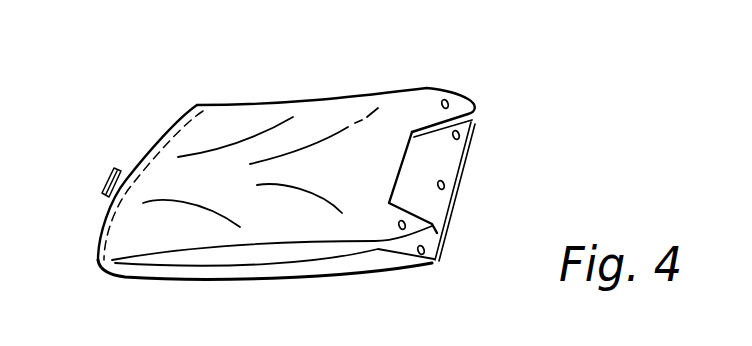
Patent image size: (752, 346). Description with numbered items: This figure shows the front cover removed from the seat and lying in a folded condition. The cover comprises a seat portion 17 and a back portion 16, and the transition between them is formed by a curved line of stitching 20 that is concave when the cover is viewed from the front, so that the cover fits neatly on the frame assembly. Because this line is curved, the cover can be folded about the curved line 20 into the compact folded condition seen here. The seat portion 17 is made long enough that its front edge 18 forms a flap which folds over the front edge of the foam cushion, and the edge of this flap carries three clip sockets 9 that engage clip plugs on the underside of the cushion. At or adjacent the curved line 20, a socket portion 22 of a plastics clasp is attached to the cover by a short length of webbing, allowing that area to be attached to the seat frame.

The back portion 16 is at (286, 148).
The seat portion 17 is at (266, 273).
The front edge 18 is at (443, 190).
The clip sockets 9 is at (454, 181).
The curved line of stitching 20 is at (84, 184).
The socket portion 22 is at (152, 181).